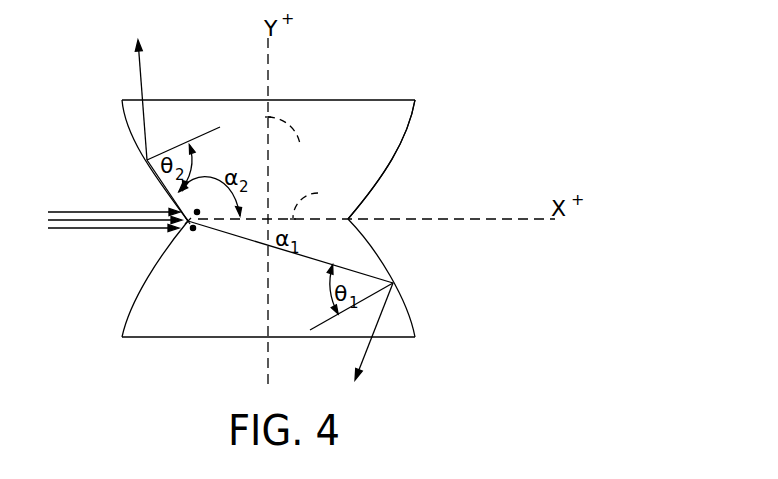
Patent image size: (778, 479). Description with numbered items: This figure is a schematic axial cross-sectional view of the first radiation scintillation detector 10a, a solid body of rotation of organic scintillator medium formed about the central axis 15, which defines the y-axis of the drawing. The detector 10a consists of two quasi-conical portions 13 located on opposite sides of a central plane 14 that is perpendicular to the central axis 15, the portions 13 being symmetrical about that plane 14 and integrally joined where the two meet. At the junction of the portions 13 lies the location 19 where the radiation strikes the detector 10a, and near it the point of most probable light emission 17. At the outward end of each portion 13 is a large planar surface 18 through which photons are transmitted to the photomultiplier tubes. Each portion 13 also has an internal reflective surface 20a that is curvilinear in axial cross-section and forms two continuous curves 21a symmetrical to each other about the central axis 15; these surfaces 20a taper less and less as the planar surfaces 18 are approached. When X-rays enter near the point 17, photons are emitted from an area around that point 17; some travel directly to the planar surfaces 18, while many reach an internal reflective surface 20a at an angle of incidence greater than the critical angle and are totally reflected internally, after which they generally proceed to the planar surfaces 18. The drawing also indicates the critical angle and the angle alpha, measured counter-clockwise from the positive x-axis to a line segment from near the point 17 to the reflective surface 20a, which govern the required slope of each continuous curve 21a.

The radiation scintillation detector 10a is at (279, 208).
The quasi-conical portion 13 is at (385, 176).
The central plane 14 is at (317, 197).
The central axis 15 is at (293, 144).
The point of most probable light emission 17 is at (196, 231).
The large planar surface 18 is at (318, 100).
The location where the radiation strikes the detector 19 is at (188, 225).
The internal reflective surface 20a is at (122, 101).
The continuous curve 21a is at (132, 134).